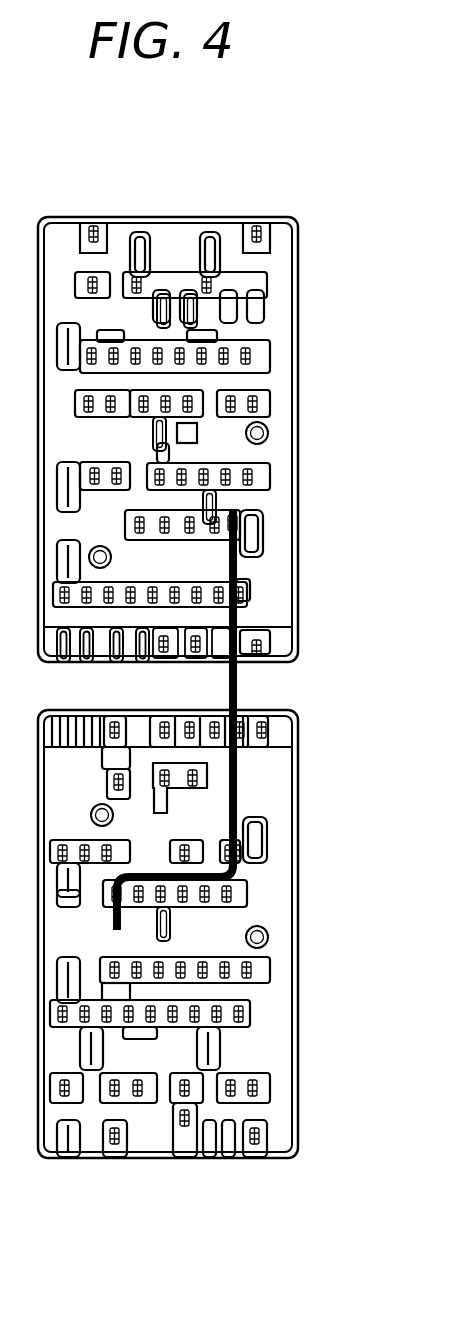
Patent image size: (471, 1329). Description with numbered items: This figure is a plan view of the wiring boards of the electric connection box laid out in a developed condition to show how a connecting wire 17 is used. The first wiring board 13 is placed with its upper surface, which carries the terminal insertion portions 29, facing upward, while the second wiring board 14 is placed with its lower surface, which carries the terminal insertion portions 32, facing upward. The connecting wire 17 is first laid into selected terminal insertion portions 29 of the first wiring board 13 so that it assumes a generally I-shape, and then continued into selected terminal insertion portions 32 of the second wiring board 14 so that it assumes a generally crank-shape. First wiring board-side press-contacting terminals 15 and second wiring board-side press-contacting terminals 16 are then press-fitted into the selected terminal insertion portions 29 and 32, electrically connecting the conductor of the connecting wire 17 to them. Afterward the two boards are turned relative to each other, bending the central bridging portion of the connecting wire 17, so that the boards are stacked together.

The first wiring board 13 is at (298, 233).
The second wiring board 14 is at (300, 1142).
The first wiring board-side press-contacting terminal 15 is at (263, 520).
The second wiring board-side press-contacting terminal 16 is at (243, 747).
The connecting wire 17 is at (230, 678).
The terminal insertion portion 29 is at (257, 540).
The terminal insertion portion 32 is at (243, 720).